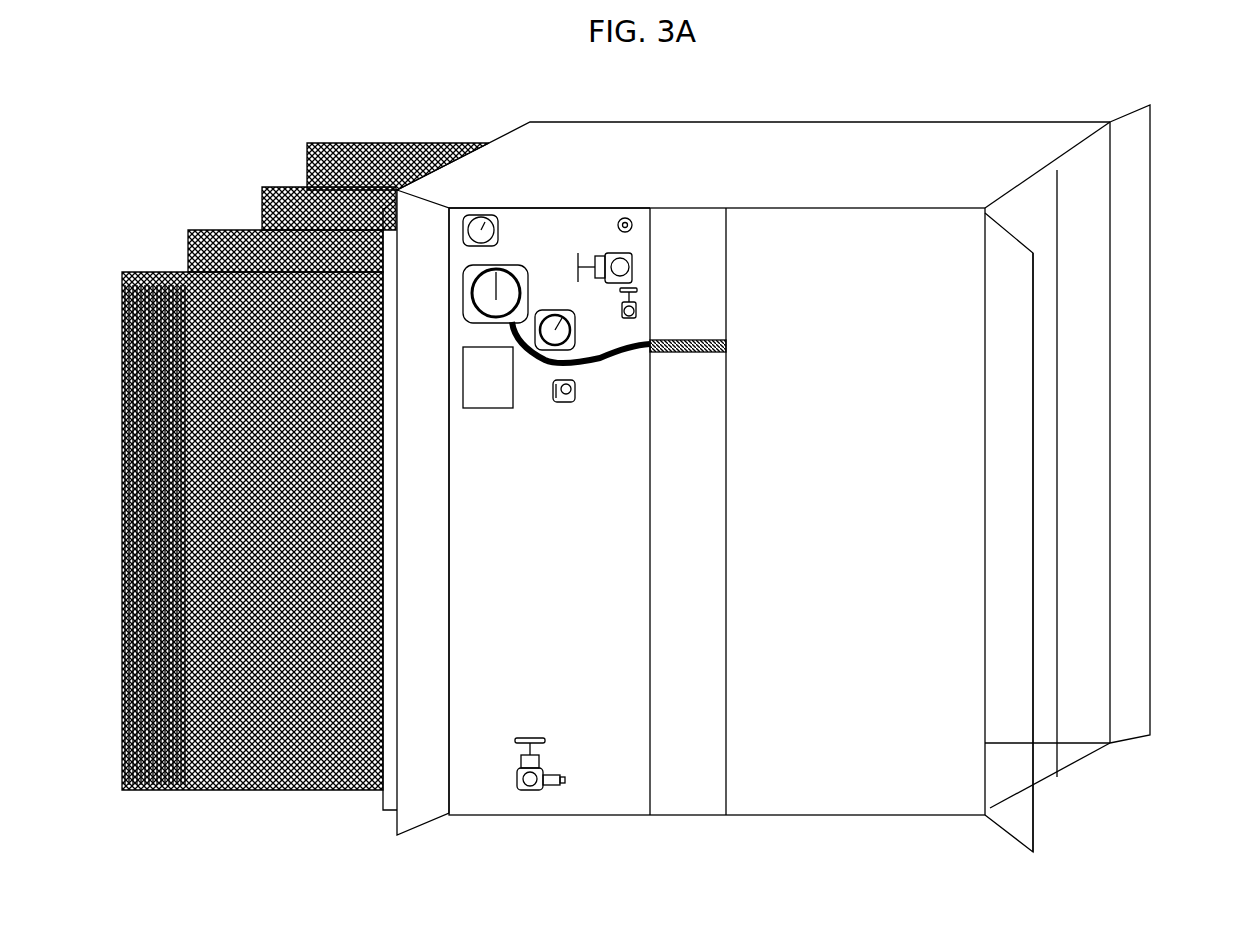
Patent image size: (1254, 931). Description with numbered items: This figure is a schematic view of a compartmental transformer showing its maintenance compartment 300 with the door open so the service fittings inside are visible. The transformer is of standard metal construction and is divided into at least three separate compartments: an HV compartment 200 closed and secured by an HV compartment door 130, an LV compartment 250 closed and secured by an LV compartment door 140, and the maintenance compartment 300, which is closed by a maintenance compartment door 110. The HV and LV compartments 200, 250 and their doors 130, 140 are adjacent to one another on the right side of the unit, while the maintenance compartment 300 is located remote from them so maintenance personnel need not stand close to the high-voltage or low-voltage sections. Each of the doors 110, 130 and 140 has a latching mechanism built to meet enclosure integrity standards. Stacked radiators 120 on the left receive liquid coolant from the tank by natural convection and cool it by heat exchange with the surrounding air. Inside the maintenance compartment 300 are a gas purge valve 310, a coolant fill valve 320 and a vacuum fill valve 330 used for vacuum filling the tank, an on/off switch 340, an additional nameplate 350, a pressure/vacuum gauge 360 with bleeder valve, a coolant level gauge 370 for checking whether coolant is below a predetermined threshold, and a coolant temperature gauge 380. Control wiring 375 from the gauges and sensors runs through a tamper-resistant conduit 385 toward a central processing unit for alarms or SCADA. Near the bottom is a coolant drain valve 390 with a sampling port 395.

The maintenance compartment door 110 is at (415, 545).
The radiator 120 is at (260, 243).
The HV compartment door 130 is at (1003, 622).
The LV compartment door 140 is at (1132, 373).
The HV compartment 200 is at (1045, 602).
The LV compartment 250 is at (1090, 570).
The maintenance compartment 300 is at (577, 220).
The gas purge valve 310 is at (625, 217).
The coolant fill valve 320 is at (637, 316).
The vacuum fill valve 330 is at (640, 260).
The on/off switch 340 is at (566, 402).
The additional nameplate 350 is at (490, 408).
The pressure/vacuum gauge 360 is at (487, 217).
The coolant level gauge 370 is at (512, 276).
The control wiring 375 is at (608, 362).
The coolant temperature gauge 380 is at (543, 308).
The tamper-resistant conduit 385 is at (728, 348).
The coolant drain valve 390 is at (527, 790).
The sampling port 395 is at (566, 783).